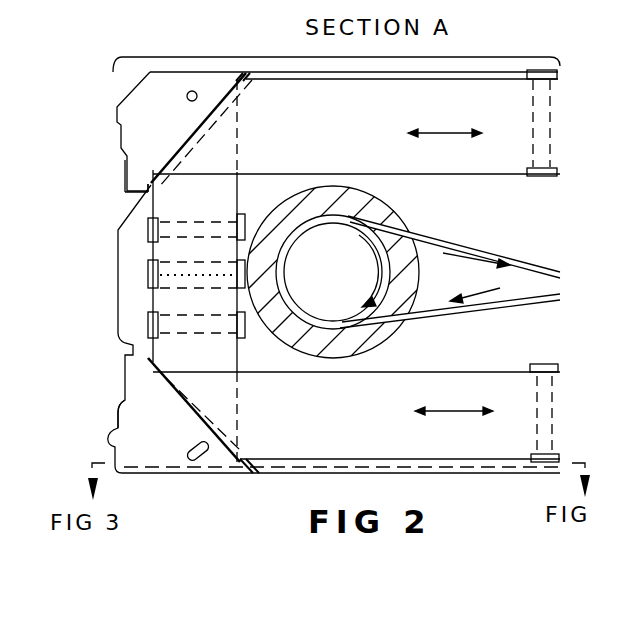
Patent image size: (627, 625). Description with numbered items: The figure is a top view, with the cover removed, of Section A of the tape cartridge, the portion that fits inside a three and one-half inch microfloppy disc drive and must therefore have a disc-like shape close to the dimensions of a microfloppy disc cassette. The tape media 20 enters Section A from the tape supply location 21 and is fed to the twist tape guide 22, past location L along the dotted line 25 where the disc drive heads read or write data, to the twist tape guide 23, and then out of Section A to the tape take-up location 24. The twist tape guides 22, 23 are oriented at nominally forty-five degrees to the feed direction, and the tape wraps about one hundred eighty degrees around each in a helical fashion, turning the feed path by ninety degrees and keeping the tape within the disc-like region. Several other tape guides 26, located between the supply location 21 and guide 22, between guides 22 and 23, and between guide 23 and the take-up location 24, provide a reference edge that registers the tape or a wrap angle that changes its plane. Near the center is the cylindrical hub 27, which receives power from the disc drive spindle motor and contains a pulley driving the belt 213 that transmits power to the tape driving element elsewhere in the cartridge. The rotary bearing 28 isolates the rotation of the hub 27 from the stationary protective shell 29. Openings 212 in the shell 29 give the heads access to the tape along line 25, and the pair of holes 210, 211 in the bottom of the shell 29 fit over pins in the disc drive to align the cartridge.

The tape media 20 is at (435, 415).
The tape supply location 21 is at (568, 413).
The twist tape guide 22 is at (143, 362).
The twist tape guide 23 is at (148, 188).
The tape take-up location 24 is at (550, 126).
The dotted line 25 is at (178, 278).
The tape guides 26 is at (150, 235).
The cylindrical hub 27 is at (333, 272).
The rotary bearing 28 is at (385, 345).
The protective shell 29 is at (118, 414).
The hole 210 is at (186, 98).
The hole 211 is at (190, 448).
The openings 212 is at (148, 271).
The belt 213 is at (452, 242).